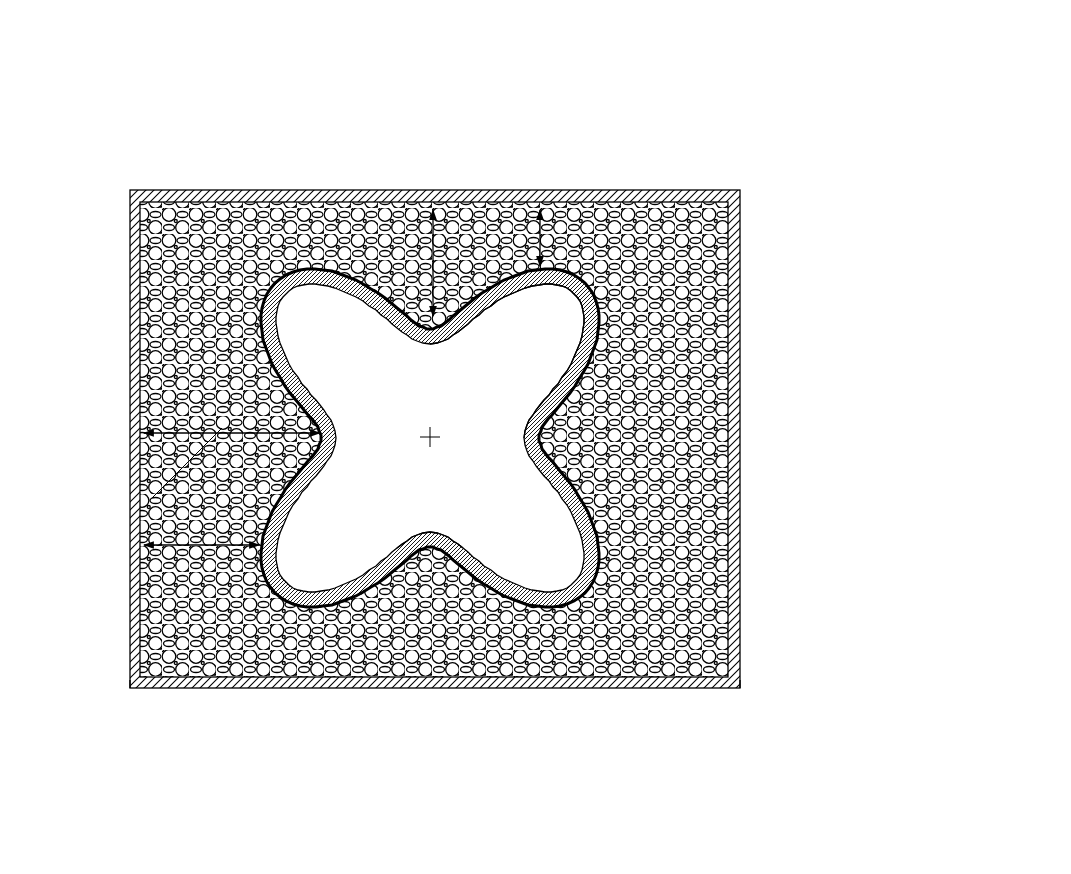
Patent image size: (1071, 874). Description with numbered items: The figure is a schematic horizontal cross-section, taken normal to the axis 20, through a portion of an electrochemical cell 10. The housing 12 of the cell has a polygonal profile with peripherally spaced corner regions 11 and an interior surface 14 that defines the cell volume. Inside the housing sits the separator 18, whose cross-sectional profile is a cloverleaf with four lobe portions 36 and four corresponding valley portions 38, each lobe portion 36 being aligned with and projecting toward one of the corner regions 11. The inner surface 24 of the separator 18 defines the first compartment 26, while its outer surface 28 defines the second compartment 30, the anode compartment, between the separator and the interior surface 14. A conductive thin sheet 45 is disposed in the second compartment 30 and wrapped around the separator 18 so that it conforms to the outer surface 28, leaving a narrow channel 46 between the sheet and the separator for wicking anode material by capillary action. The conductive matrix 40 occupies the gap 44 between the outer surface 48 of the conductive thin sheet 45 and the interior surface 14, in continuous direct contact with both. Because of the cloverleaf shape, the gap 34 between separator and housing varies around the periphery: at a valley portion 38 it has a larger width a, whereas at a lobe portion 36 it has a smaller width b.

The electrochemical cell 10 is at (705, 57).
The corner regions 11 is at (131, 688).
The housing 12 is at (741, 244).
The interior surface 14 is at (722, 622).
The separator 18 is at (432, 547).
The axis 20 is at (438, 432).
The inner surface 24 is at (548, 377).
The first compartment 26 is at (404, 384).
The outer surface 28 is at (603, 518).
The second compartment 30 is at (724, 331).
The gap 34 is at (143, 503).
The lobe portions 36 is at (618, 283).
The valley portions 38 is at (407, 317).
The conductive matrix 40 is at (281, 209).
The gap 44 is at (505, 215).
The conductive thin sheet 45 is at (254, 314).
The channel 46 is at (296, 293).
The outer surface 48 is at (258, 355).
The width a is at (143, 436).
The width b is at (143, 548).